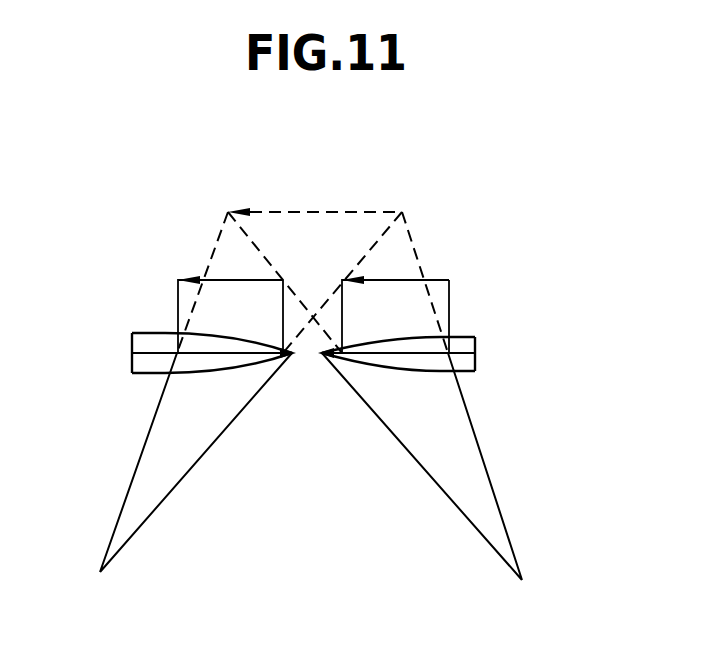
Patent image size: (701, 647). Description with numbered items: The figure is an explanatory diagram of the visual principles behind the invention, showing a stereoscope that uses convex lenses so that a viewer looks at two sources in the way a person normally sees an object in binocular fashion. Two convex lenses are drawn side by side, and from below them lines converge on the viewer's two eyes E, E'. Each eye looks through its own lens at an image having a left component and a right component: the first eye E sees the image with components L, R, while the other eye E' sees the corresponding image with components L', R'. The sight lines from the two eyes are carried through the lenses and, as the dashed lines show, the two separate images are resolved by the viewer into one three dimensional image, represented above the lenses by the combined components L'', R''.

The left component L is at (218, 302).
The right component R is at (295, 301).
The left component L' is at (385, 301).
The right component R' is at (467, 301).
The left component of resolved image L'' is at (289, 268).
The right component of resolved image R'' is at (365, 266).
The eye E is at (192, 484).
The eye E' is at (431, 485).